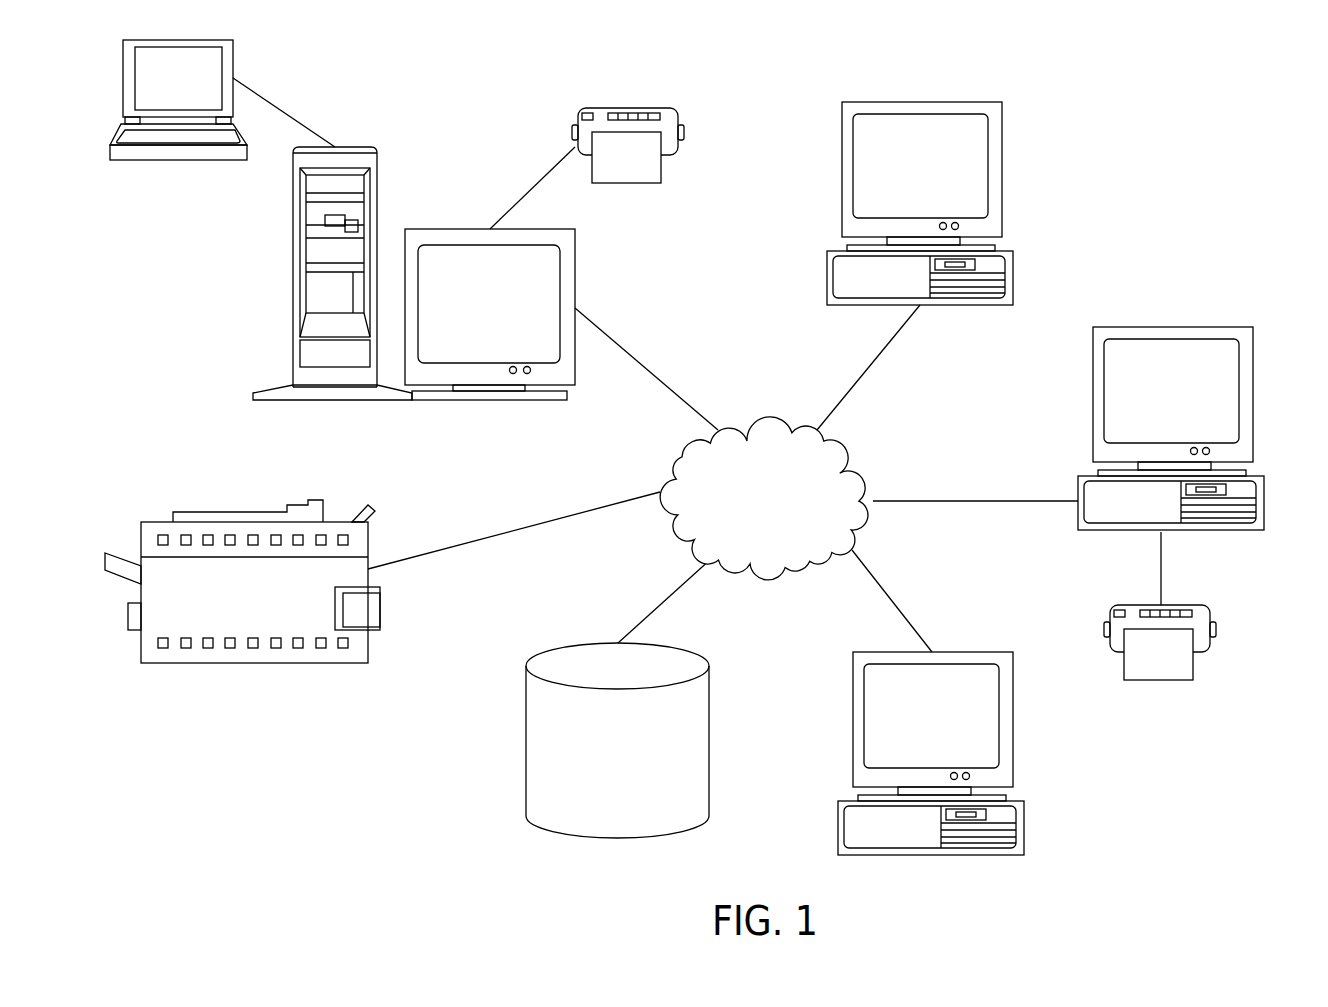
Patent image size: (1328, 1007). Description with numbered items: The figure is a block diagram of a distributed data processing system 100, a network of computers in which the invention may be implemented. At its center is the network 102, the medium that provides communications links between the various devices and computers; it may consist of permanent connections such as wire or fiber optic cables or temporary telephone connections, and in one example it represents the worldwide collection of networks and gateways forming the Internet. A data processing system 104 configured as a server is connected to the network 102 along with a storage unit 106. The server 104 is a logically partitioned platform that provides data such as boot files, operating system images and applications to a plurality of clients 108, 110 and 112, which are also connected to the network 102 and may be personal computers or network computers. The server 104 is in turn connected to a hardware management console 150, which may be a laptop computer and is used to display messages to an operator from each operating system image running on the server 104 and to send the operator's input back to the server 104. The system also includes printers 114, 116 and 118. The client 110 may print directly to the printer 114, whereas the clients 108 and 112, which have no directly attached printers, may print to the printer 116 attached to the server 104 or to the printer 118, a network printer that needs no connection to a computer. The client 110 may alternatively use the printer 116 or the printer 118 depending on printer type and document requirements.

The distributed data processing system 100 is at (1137, 205).
The network 102 is at (790, 517).
The data processing system configured as a server 104 is at (440, 133).
The storage unit 106 is at (638, 773).
The client 108 is at (933, 175).
The client 110 is at (1196, 412).
The client 112 is at (954, 740).
The printer 114 is at (1218, 634).
The printer 116 is at (683, 137).
The network printer 118 is at (265, 614).
The hardware management console 150 is at (195, 97).